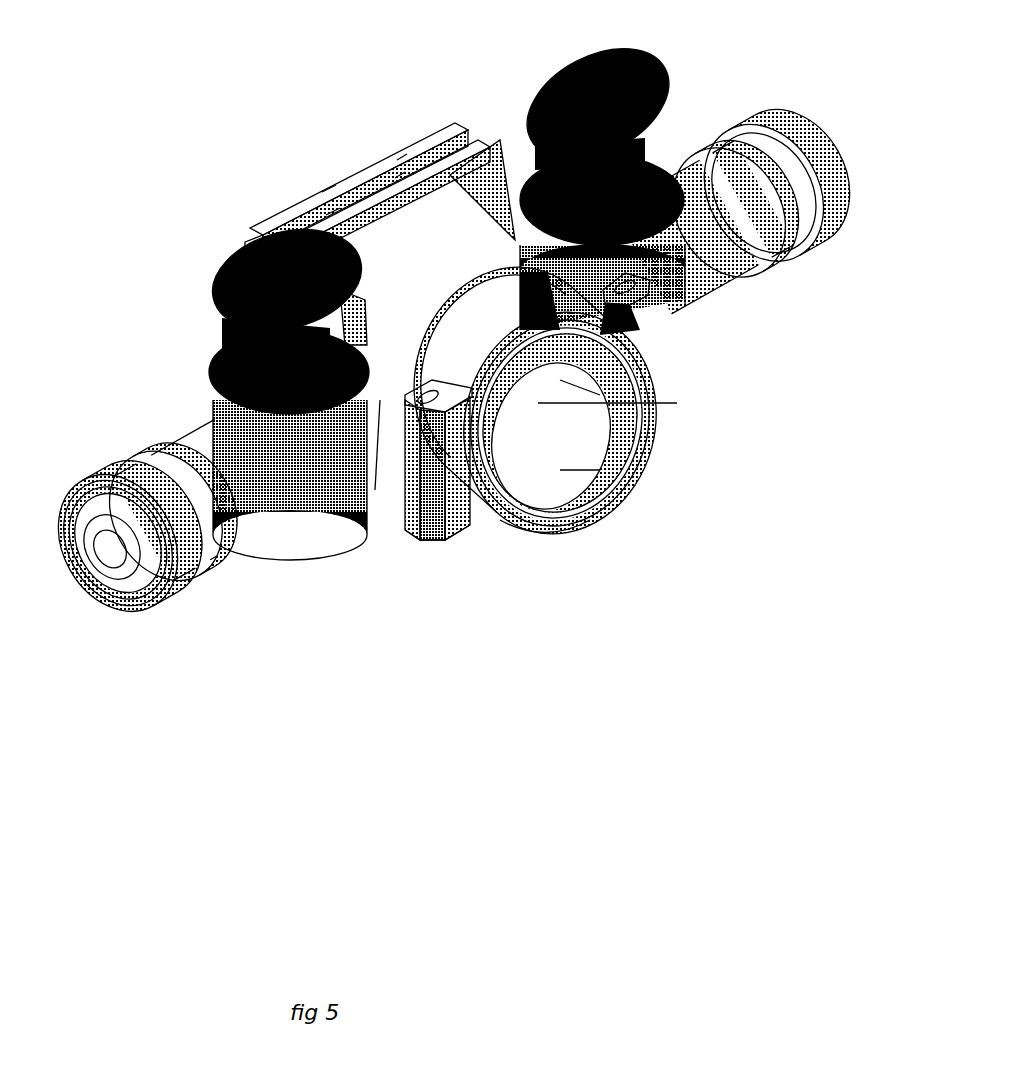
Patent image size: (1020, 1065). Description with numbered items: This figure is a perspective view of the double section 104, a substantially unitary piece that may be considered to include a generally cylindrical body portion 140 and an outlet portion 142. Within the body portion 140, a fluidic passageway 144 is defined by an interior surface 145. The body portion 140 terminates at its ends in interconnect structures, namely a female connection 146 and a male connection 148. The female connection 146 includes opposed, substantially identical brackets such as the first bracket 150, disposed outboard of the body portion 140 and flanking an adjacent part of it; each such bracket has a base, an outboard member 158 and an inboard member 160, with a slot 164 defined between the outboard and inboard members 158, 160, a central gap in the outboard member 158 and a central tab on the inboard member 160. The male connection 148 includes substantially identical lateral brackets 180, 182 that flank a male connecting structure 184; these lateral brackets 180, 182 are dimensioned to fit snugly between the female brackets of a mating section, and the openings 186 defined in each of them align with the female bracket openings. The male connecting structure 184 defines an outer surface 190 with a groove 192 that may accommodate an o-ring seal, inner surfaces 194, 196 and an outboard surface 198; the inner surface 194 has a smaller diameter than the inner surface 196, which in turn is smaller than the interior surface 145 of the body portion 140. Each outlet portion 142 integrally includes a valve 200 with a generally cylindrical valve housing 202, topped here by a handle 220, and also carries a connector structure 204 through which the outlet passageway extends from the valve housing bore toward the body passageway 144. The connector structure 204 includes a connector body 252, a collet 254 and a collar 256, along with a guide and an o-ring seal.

The double section 104 is at (361, 164).
The body portion 140 is at (390, 490).
The outlet portion 142 is at (469, 393).
The fluidic passageway 144 is at (643, 433).
The interior surface 145 is at (629, 402).
The female connection 146 is at (285, 225).
The male connection 148 is at (582, 436).
The first bracket 150 is at (361, 168).
The outboard member 158 is at (400, 168).
The inboard member 160 is at (400, 182).
The slot 164 is at (282, 236).
The lateral bracket 180 is at (467, 506).
The lateral bracket 182 is at (675, 365).
The male connecting structure 184 is at (567, 535).
The openings 186 is at (690, 290).
The outer surface 190 is at (487, 520).
The groove 192 is at (520, 357).
The inner surface 194 is at (598, 503).
The inner surface 196 is at (573, 472).
The outboard surface 198 is at (673, 478).
The valve 200 is at (432, 329).
The valve housing 202 is at (690, 325).
The connector structure 204 is at (776, 265).
The valve knob 220 is at (648, 56).
The connector body 252 is at (740, 275).
The collet 254 is at (833, 200).
The collar 256 is at (163, 607).